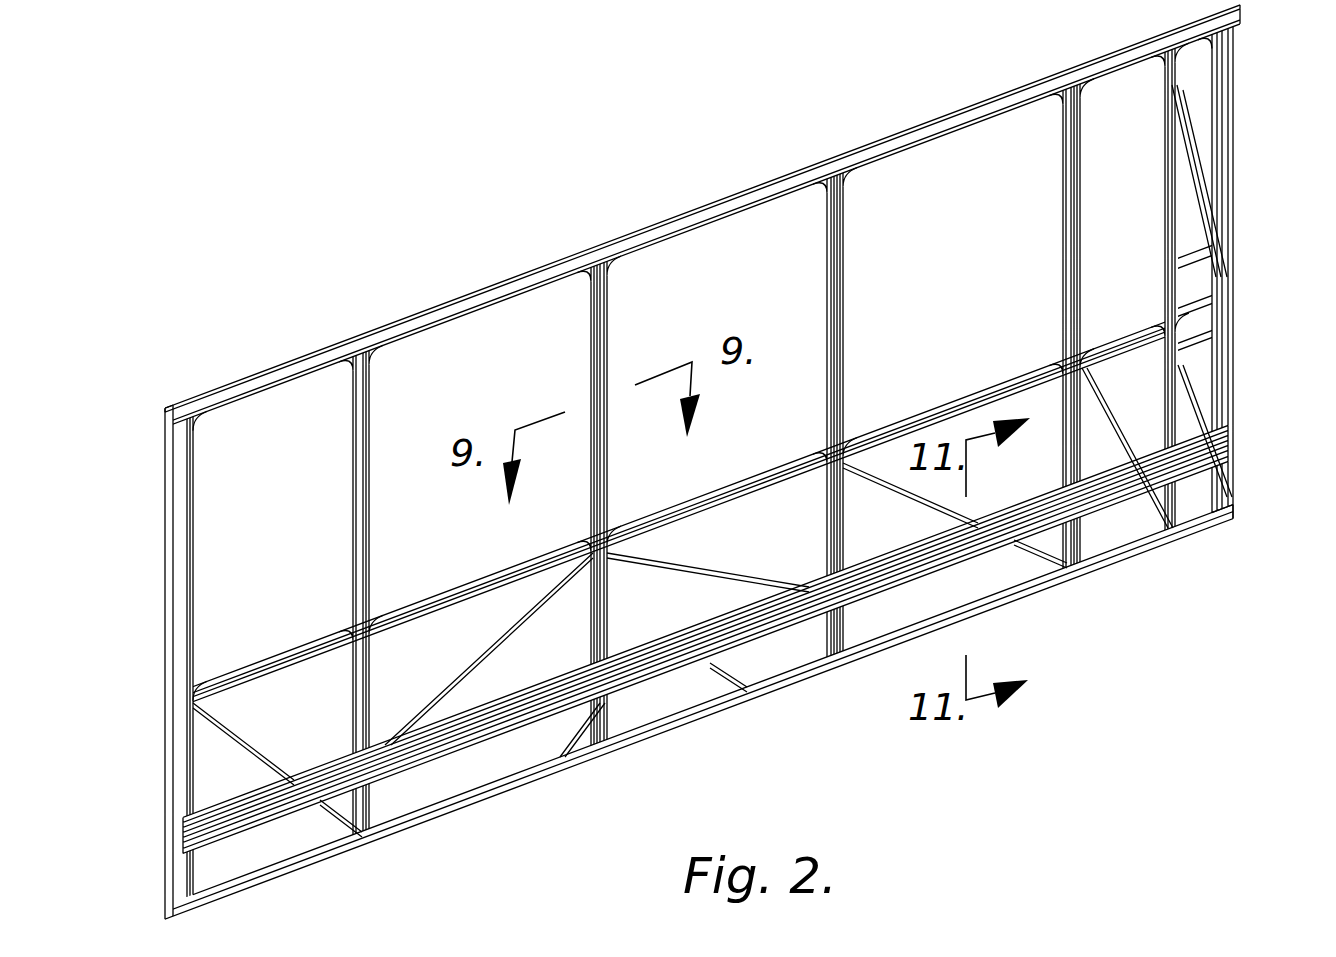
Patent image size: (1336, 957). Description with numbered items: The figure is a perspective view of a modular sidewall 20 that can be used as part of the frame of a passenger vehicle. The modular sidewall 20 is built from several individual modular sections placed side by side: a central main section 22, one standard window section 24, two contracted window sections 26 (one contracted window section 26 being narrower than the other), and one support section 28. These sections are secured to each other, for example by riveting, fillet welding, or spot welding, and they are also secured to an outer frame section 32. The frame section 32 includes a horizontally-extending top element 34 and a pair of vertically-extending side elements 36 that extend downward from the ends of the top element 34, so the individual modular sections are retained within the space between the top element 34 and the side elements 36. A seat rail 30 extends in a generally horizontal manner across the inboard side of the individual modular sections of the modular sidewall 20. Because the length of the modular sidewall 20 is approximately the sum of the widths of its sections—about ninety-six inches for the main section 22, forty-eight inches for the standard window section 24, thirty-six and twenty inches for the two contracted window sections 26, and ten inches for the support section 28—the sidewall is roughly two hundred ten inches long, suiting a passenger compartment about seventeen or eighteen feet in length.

The modular sidewall 20 is at (355, 203).
The main section 22 is at (622, 745).
The standard window section 24 is at (888, 650).
The contracted window section 26 is at (290, 872).
The support section 28 is at (1215, 523).
The seat rail 30 is at (980, 545).
The outer frame section 32 is at (1047, 48).
The top element 34 is at (935, 117).
The side elements 36 is at (1232, 213).